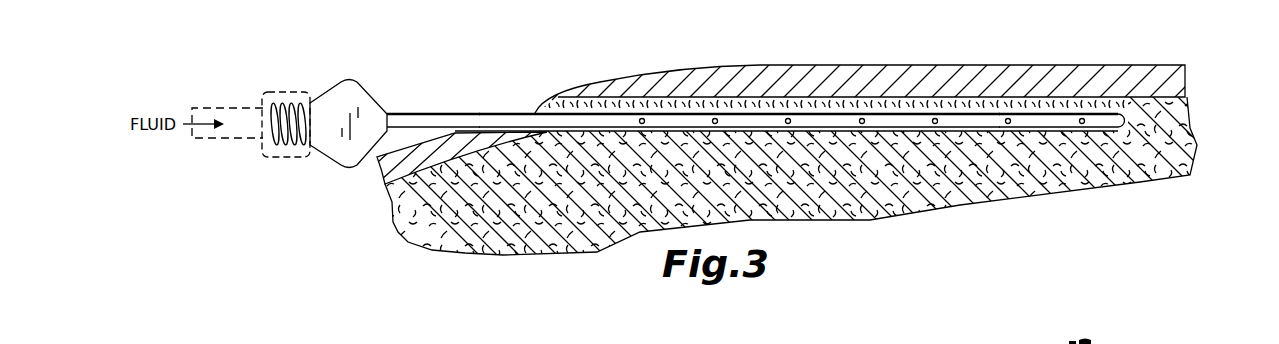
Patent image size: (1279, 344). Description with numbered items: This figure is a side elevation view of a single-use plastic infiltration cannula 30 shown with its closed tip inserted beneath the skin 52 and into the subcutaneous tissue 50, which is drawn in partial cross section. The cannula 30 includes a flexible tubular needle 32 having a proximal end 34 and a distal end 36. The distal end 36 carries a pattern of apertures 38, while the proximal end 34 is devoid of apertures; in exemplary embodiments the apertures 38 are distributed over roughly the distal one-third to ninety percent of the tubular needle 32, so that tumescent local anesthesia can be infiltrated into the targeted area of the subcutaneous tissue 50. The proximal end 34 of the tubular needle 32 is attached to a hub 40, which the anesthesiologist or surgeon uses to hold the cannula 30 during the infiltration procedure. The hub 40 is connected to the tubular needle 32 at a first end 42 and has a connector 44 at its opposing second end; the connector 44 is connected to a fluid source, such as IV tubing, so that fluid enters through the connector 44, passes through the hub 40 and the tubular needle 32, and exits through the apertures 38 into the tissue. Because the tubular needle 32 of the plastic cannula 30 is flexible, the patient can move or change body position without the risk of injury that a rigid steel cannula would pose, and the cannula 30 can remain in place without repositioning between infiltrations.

The plastic infiltration cannula 30 is at (462, 48).
The flexible tubular needle 32 is at (497, 112).
The proximal end 34 is at (397, 115).
The distal end 36 is at (1101, 112).
The apertures 38 is at (713, 120).
The hub 40 is at (357, 98).
The first end 42 is at (377, 100).
The connector 44 is at (302, 104).
The subcutaneous tissue 50 is at (1191, 130).
The skin 52 is at (1187, 70).